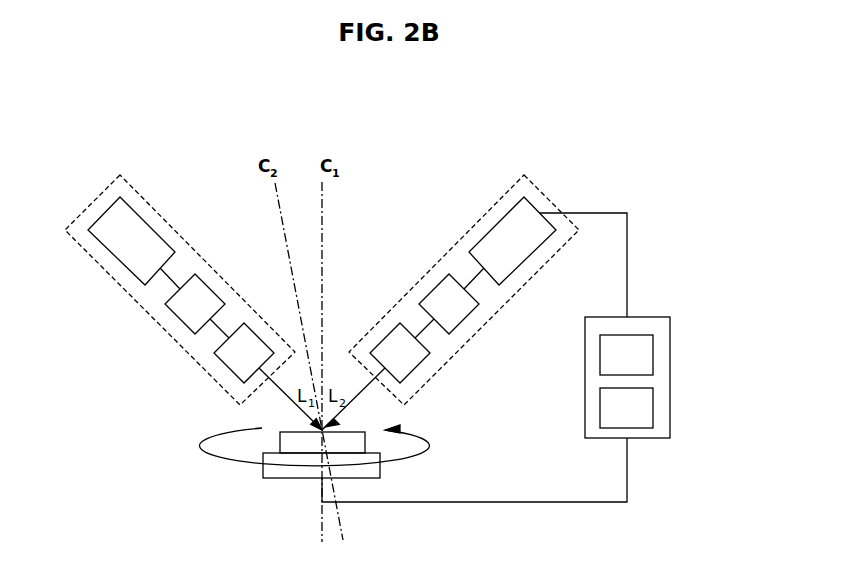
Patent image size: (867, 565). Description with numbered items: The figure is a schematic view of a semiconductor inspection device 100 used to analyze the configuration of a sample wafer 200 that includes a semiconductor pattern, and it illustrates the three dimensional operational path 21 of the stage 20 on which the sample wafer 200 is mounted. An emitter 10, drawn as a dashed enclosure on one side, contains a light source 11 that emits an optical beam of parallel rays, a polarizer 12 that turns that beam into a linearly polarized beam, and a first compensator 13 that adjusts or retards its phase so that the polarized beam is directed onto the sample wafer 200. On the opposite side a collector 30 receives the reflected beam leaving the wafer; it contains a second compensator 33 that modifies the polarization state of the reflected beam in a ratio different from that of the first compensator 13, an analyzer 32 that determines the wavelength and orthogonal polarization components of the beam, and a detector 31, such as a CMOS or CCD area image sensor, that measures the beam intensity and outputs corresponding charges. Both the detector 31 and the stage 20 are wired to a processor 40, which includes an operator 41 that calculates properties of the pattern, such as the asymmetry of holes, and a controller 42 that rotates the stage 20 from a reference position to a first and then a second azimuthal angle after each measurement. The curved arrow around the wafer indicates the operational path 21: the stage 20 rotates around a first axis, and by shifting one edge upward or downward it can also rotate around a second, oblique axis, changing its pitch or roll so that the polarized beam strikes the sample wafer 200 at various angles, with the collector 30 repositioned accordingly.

The semiconductor inspection device 100 is at (91, 115).
The emitter 10 is at (197, 247).
The light source 11 is at (131, 241).
The polarizer 12 is at (195, 304).
The first compensator 13 is at (244, 353).
The stage 20 is at (277, 478).
The operational path 21 is at (208, 444).
The sample wafer 200 is at (322, 443).
The collector 30 is at (543, 193).
The detector 31 is at (512, 241).
The analyzer 32 is at (449, 304).
The second compensator 33 is at (400, 353).
The processor 40 is at (670, 377).
The operator 41 is at (626, 355).
The controller 42 is at (626, 408).